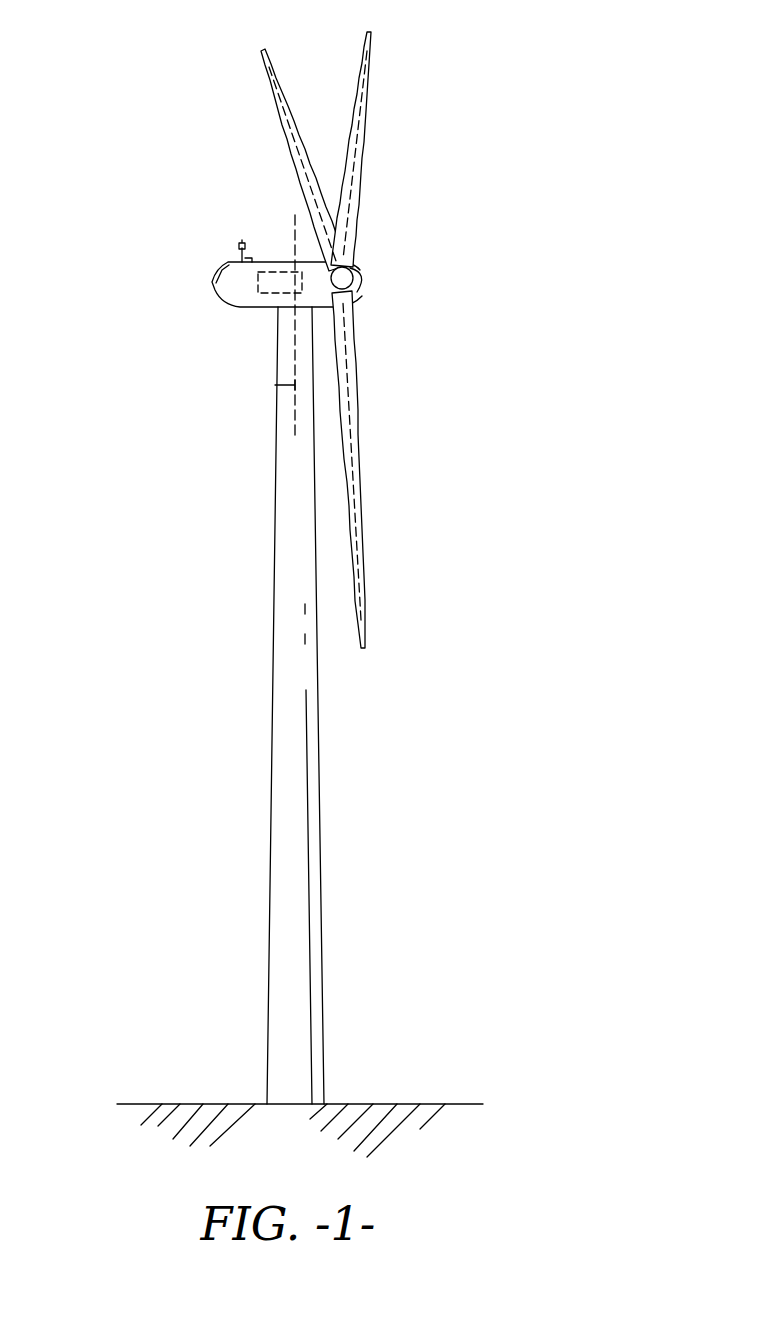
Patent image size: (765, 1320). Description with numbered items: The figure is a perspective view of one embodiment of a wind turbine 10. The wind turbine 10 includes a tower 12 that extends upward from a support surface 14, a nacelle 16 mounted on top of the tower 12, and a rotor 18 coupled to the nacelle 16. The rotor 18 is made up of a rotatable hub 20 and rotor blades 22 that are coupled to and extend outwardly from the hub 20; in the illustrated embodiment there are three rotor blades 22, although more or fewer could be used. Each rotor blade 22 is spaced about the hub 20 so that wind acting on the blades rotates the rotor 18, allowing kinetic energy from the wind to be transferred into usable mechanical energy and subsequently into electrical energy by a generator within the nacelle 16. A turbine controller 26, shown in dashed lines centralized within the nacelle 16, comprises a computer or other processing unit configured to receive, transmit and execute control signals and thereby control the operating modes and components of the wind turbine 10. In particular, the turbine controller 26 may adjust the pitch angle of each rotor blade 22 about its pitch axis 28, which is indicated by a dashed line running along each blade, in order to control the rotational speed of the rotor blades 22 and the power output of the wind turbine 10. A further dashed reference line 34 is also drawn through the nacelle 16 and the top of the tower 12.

The wind turbine 10 is at (327, 581).
The tower 12 is at (282, 813).
The support surface 14 is at (197, 1102).
The nacelle 16 is at (272, 271).
The rotor 18 is at (348, 326).
The rotatable hub 20 is at (367, 283).
The rotor blade 22 is at (334, 326).
The turbine controller 26 is at (287, 268).
The pitch axis 28 is at (298, 170).
The yaw axis 34 is at (272, 382).